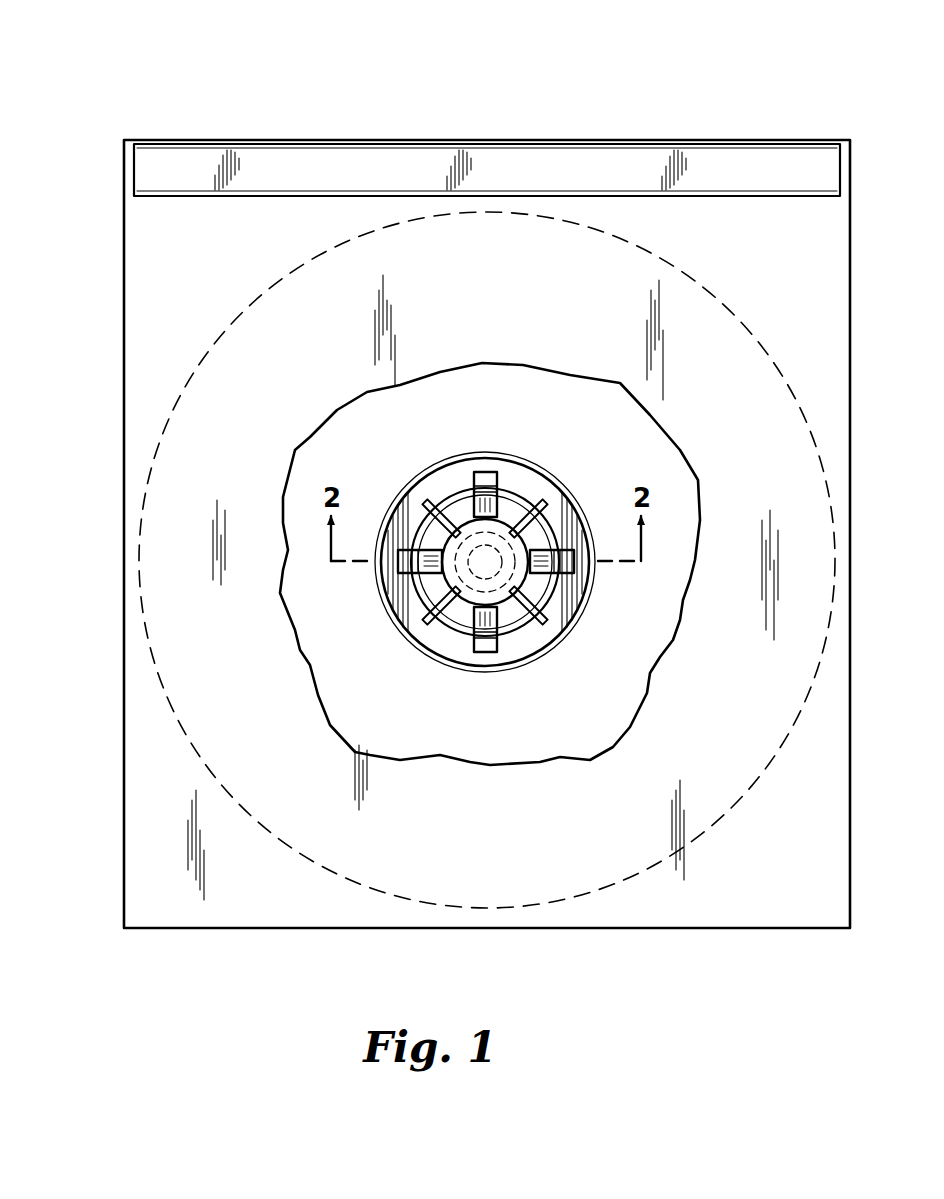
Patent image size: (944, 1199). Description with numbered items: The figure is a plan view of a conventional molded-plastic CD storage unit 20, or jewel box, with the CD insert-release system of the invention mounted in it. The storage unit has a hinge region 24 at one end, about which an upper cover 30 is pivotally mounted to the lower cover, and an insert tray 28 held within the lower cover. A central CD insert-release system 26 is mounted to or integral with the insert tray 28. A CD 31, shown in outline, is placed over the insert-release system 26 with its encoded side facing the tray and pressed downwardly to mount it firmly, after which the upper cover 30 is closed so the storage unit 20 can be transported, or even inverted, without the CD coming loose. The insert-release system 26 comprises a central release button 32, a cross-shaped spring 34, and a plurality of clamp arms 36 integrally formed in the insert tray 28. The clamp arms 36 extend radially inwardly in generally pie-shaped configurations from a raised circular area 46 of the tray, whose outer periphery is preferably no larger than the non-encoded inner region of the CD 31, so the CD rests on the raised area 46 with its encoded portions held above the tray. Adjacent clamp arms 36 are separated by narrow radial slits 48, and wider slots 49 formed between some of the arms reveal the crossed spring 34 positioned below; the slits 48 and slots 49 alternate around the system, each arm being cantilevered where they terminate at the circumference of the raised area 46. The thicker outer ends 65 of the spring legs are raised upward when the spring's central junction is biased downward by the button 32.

The CD storage unit 20 is at (200, 72).
The hinge region 24 is at (121, 162).
The central CD insert-release system 26 is at (465, 404).
The insert tray 28 is at (435, 160).
The upper cover 30 is at (158, 852).
The CD 31 is at (220, 332).
The central release button 32 is at (513, 510).
The cross-shaped spring 34 is at (469, 622).
The clamp arms 36 is at (519, 629).
The raised circular area 46 is at (560, 508).
The radial openings or slits 48 is at (430, 500).
The slots 49 is at (420, 573).
The outer ends of the legs 65 is at (404, 568).